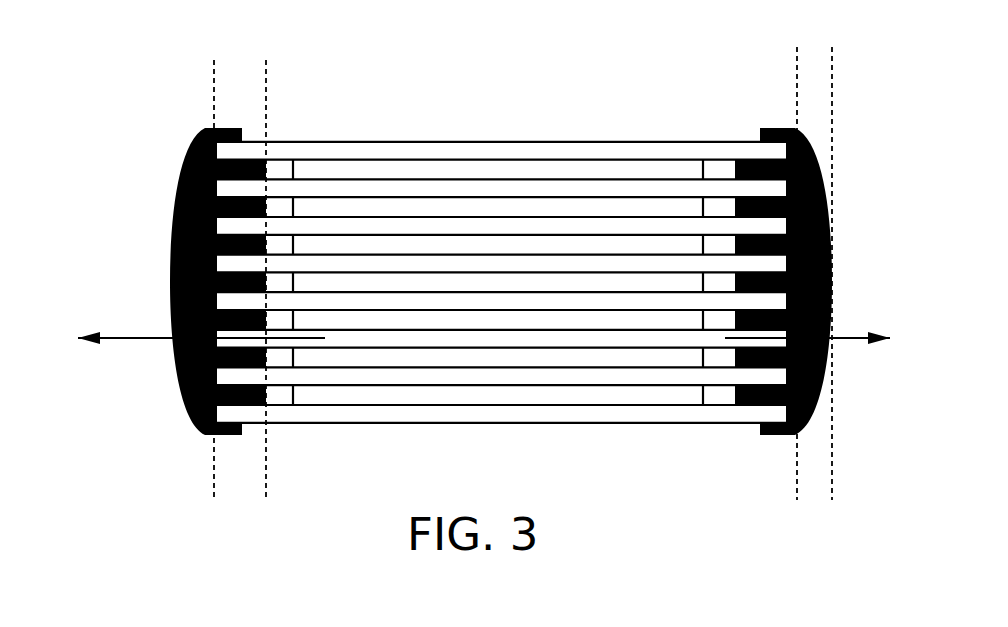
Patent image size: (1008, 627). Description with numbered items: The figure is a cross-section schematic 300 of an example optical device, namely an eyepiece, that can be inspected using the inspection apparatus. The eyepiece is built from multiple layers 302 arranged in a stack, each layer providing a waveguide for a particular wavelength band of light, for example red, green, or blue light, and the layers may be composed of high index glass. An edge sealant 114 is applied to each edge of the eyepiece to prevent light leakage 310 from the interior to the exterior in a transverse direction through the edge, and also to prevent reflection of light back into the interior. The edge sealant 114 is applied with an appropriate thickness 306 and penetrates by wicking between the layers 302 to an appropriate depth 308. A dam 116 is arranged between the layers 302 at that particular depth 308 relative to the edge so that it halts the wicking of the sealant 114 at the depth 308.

The cross-section schematic 300 is at (136, 52).
The edge sealant 114 is at (182, 177).
The layers 302 is at (417, 145).
The dam 116 is at (295, 395).
The depth 308 is at (266, 67).
The thickness 306 is at (832, 68).
The light leakage 310 is at (120, 340).